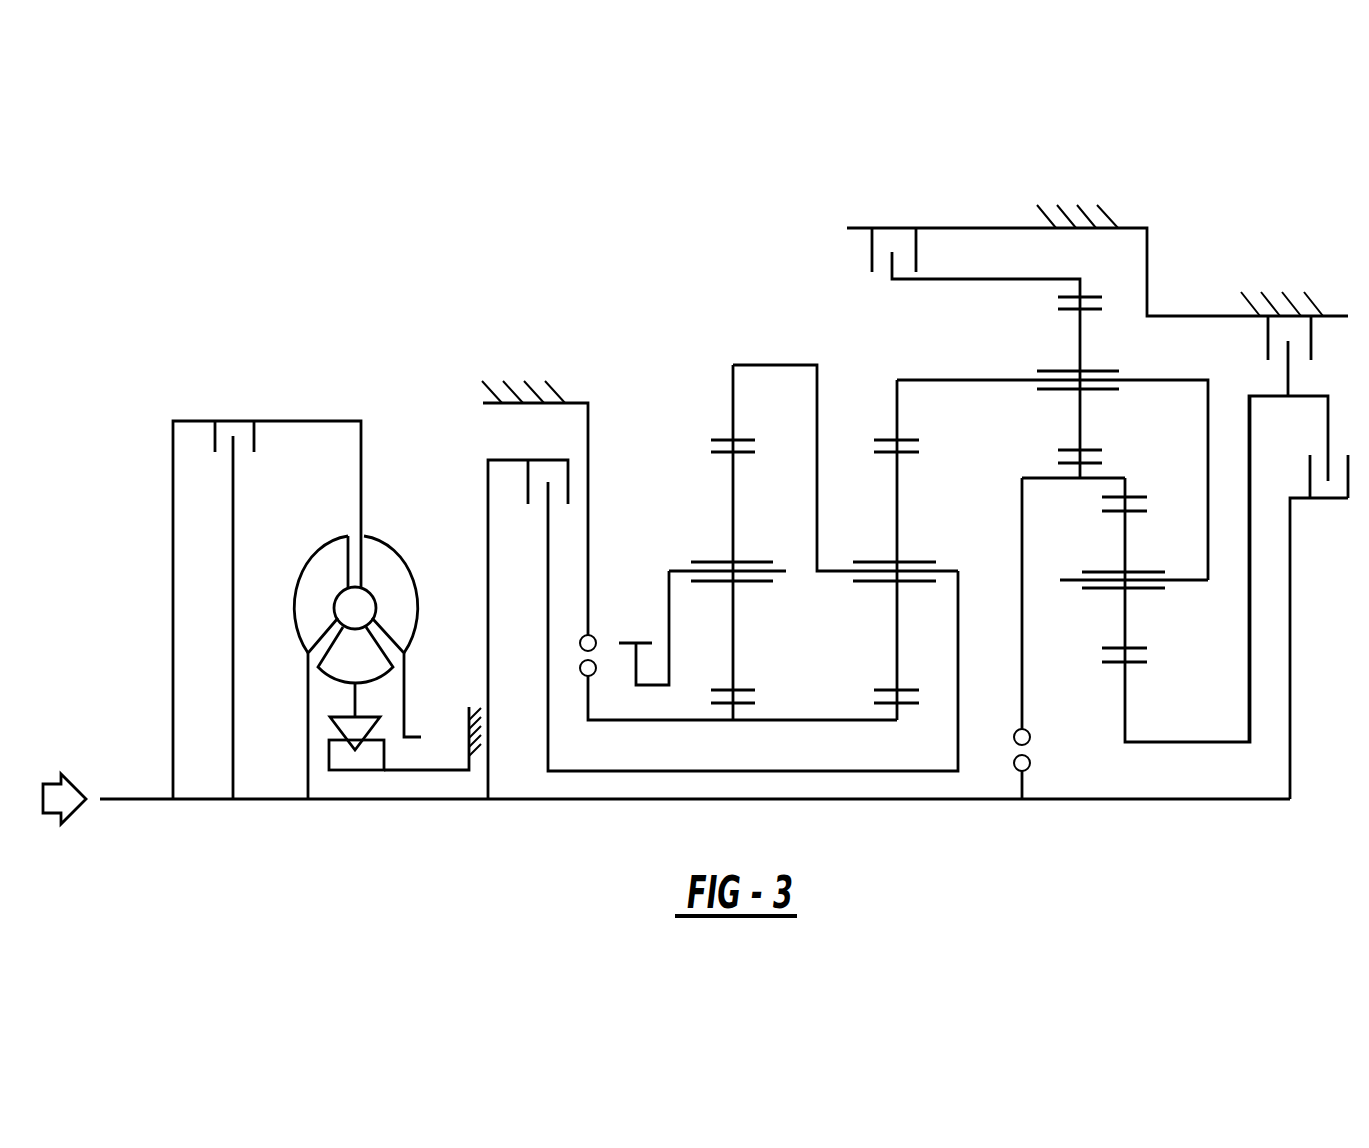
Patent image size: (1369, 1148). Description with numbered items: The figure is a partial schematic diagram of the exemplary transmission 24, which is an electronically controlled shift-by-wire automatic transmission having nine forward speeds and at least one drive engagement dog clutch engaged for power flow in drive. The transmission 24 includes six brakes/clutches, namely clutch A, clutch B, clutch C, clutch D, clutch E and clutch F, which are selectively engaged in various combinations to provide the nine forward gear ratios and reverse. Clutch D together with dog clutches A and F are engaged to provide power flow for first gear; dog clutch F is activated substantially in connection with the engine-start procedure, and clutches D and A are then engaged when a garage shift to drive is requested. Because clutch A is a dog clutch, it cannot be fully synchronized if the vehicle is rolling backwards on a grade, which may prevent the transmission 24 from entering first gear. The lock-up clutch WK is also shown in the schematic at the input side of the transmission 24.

The transmission 24 is at (1142, 150).
The torque converter lock-up clutch WK is at (267, 590).
The dog clutch A is at (1036, 638).
The clutch B is at (1319, 627).
The clutch C is at (1284, 501).
The clutch D is at (1097, 253).
The clutch E is at (720, 590).
The dog clutch F is at (729, 677).